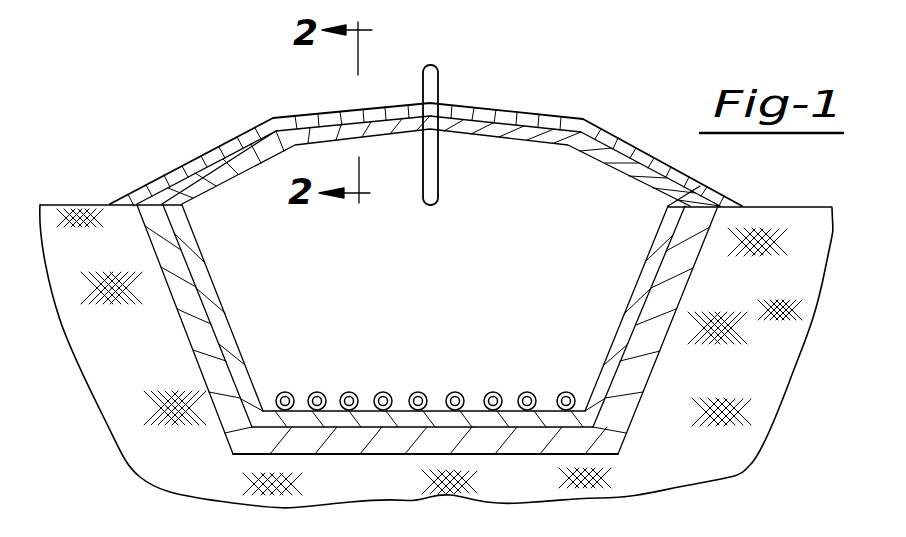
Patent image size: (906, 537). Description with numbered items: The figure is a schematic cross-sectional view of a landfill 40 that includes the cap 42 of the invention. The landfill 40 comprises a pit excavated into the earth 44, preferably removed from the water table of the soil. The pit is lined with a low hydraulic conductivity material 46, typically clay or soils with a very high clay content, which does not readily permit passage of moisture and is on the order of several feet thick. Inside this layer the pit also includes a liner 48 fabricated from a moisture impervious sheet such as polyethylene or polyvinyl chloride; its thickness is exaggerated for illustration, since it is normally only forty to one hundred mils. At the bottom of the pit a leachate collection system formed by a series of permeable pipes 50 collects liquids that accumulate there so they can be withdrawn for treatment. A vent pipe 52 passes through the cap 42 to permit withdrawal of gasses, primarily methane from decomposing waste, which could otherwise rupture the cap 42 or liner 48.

The landfill 40 is at (222, 114).
The cap 42 is at (530, 106).
The earth 44 is at (753, 378).
The low hydraulic conductivity material 46 is at (263, 436).
The liner 48 is at (388, 420).
The permeable pipes 50 is at (548, 392).
The vent pipe 52 is at (434, 64).